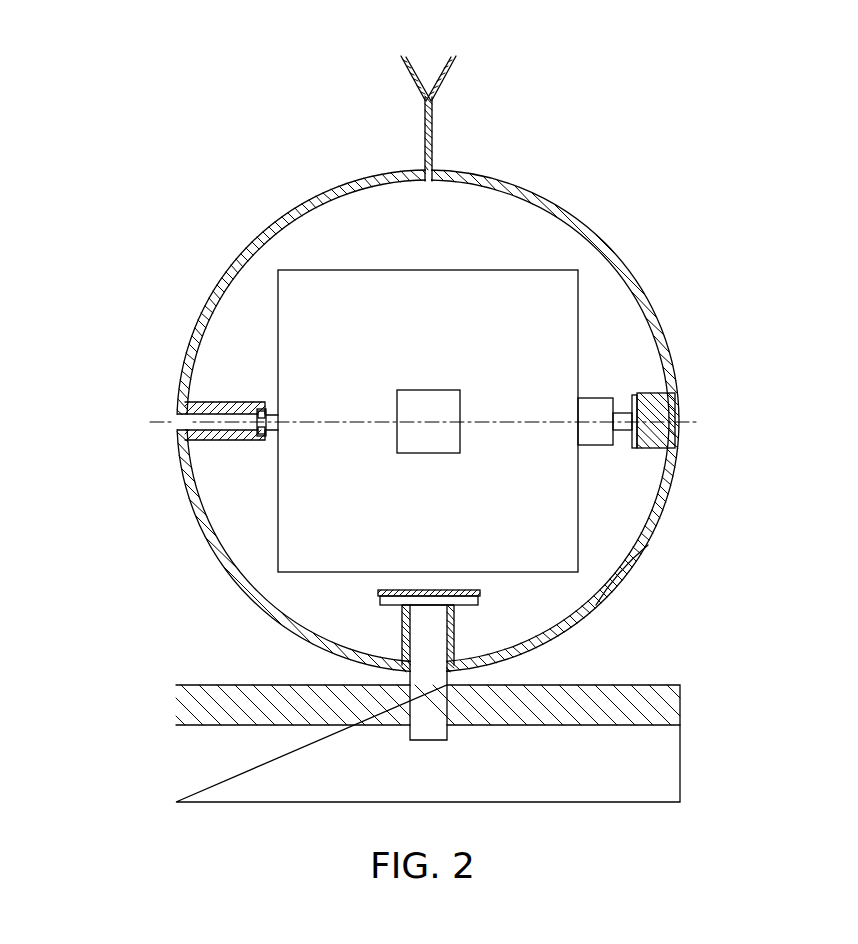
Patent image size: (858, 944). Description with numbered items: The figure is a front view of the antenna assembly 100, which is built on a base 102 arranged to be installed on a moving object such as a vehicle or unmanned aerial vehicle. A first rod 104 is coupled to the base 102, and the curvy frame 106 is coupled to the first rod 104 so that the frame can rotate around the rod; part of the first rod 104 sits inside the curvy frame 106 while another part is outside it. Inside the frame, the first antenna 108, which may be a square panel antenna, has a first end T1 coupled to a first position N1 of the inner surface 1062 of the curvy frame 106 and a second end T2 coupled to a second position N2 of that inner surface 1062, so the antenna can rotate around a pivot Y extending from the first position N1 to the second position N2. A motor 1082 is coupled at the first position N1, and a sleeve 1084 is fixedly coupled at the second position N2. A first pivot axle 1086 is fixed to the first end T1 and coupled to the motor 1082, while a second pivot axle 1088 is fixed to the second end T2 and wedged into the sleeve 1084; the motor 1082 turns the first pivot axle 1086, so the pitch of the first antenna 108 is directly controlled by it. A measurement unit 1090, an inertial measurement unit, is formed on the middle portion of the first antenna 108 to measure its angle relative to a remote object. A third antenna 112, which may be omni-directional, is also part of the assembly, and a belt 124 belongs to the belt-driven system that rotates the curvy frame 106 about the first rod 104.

The antenna assembly 100 is at (757, 68).
The base 102 is at (182, 700).
The first rod 104 is at (428, 741).
The curvy frame 106 is at (587, 232).
The inner surface 1062 is at (637, 547).
The first antenna 108 is at (428, 284).
The motor 1082 is at (670, 405).
The sleeve 1084 is at (235, 441).
The first pivot axle 1086 is at (622, 413).
The second pivot axle 1088 is at (262, 407).
The measurement unit 1090 is at (428, 400).
The third antenna 112 is at (425, 128).
The belt 124 is at (378, 593).
The first end T1 is at (577, 412).
The second end T2 is at (282, 412).
The first position N1 is at (660, 430).
The second position N2 is at (178, 419).
The pivot Y is at (713, 423).